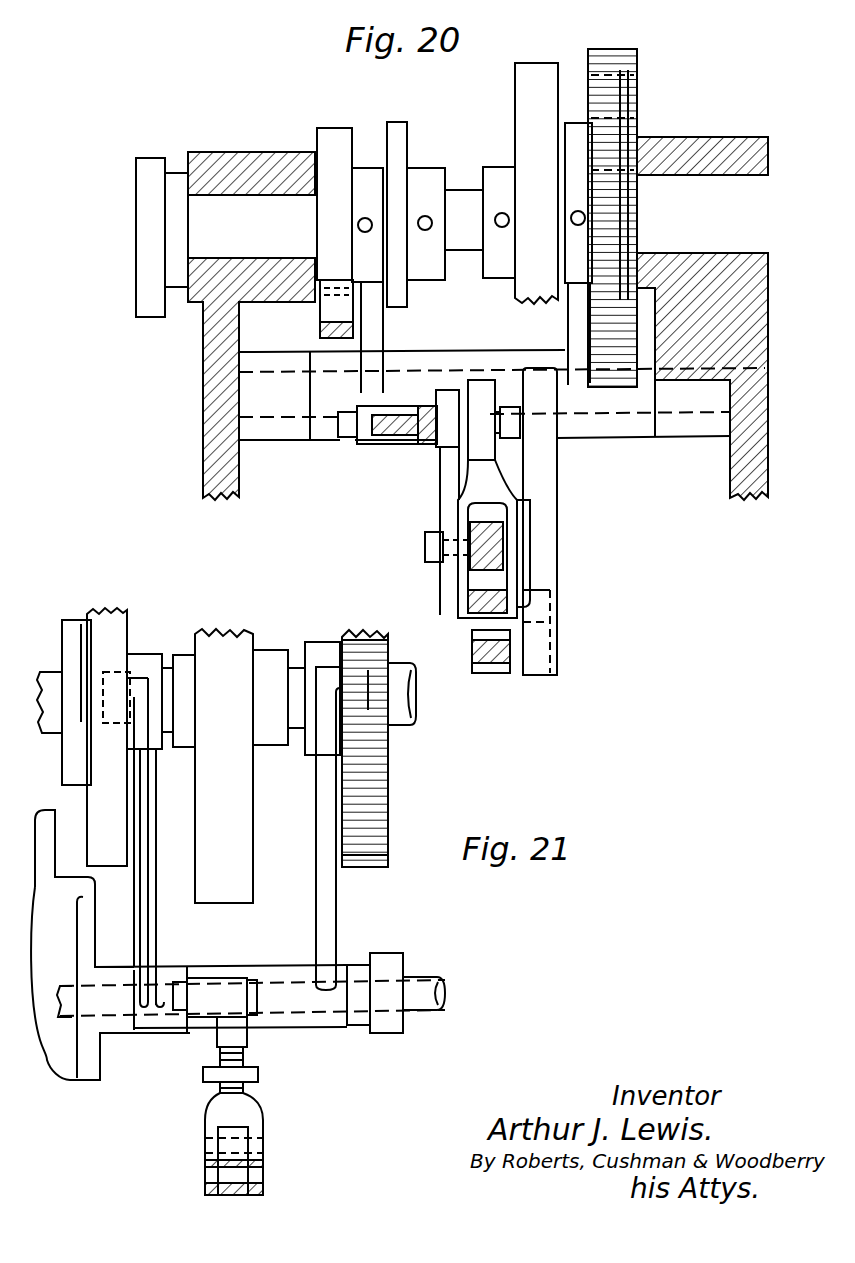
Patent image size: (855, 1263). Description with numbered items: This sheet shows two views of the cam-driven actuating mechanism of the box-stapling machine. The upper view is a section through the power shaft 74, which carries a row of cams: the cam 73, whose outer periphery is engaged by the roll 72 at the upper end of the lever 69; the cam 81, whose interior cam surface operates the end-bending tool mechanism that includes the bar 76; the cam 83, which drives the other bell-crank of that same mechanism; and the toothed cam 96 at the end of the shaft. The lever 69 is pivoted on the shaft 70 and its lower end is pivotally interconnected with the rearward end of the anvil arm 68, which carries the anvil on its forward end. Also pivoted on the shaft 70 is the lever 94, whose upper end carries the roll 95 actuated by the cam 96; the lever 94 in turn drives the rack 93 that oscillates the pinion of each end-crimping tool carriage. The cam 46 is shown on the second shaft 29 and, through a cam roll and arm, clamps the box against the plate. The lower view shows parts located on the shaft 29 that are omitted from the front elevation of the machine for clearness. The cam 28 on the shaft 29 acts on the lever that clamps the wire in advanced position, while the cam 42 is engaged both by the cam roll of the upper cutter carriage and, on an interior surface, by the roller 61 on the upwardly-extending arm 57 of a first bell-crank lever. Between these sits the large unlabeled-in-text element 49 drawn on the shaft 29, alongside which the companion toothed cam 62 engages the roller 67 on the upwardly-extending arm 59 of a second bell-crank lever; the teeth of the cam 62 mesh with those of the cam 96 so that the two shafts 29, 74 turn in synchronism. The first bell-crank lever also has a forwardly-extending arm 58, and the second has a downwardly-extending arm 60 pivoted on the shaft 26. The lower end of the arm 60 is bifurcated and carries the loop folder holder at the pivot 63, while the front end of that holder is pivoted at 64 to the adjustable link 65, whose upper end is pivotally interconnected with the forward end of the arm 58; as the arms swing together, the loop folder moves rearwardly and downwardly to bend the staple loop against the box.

In FIG. 20, the cam 46 is at (150, 160).
In FIG. 20, the cam 73 is at (335, 138).
In FIG. 20, the roll 72 is at (325, 322).
In FIG. 20, the cam 83 is at (402, 137).
In FIG. 20, the shaft 74 is at (462, 197).
In FIG. 20, the cam 81 is at (525, 85).
In FIG. 20, the cam 96 is at (626, 75).
In FIG. 20, the roll 95 is at (636, 122).
In FIG. 20, the lever 69 is at (381, 336).
In FIG. 20, the shaft 70 is at (307, 418).
In FIG. 20, the lever 94 is at (580, 322).
In FIG. 20, the arm 68 is at (470, 514).
In FIG. 20, the bar 76 is at (470, 588).
In FIG. 20, the rack 93 is at (480, 652).
In FIG. 21, the cam 28 is at (72, 622).
In FIG. 21, the cam 42 is at (108, 614).
In FIG. 21, the roller 61 is at (126, 662).
In FIG. 21, the disc 49 is at (238, 642).
In FIG. 21, the upwardly-extending arm 57 is at (146, 852).
In FIG. 21, the upwardly-extending arm 59 is at (322, 822).
In FIG. 21, the roller 67 is at (386, 652).
In FIG. 21, the cam 62 is at (390, 862).
In FIG. 21, the shaft 29 is at (405, 727).
In FIG. 21, the shaft 26 is at (428, 983).
In FIG. 21, the forwardly-extending arm 58 is at (205, 980).
In FIG. 21, the downwardly-extending arm 60 is at (244, 1068).
In FIG. 21, the adjustable link 65 is at (212, 1102).
In FIG. 21, the pivot 64 is at (212, 1152).
In FIG. 21, the pivot 63 is at (262, 1182).